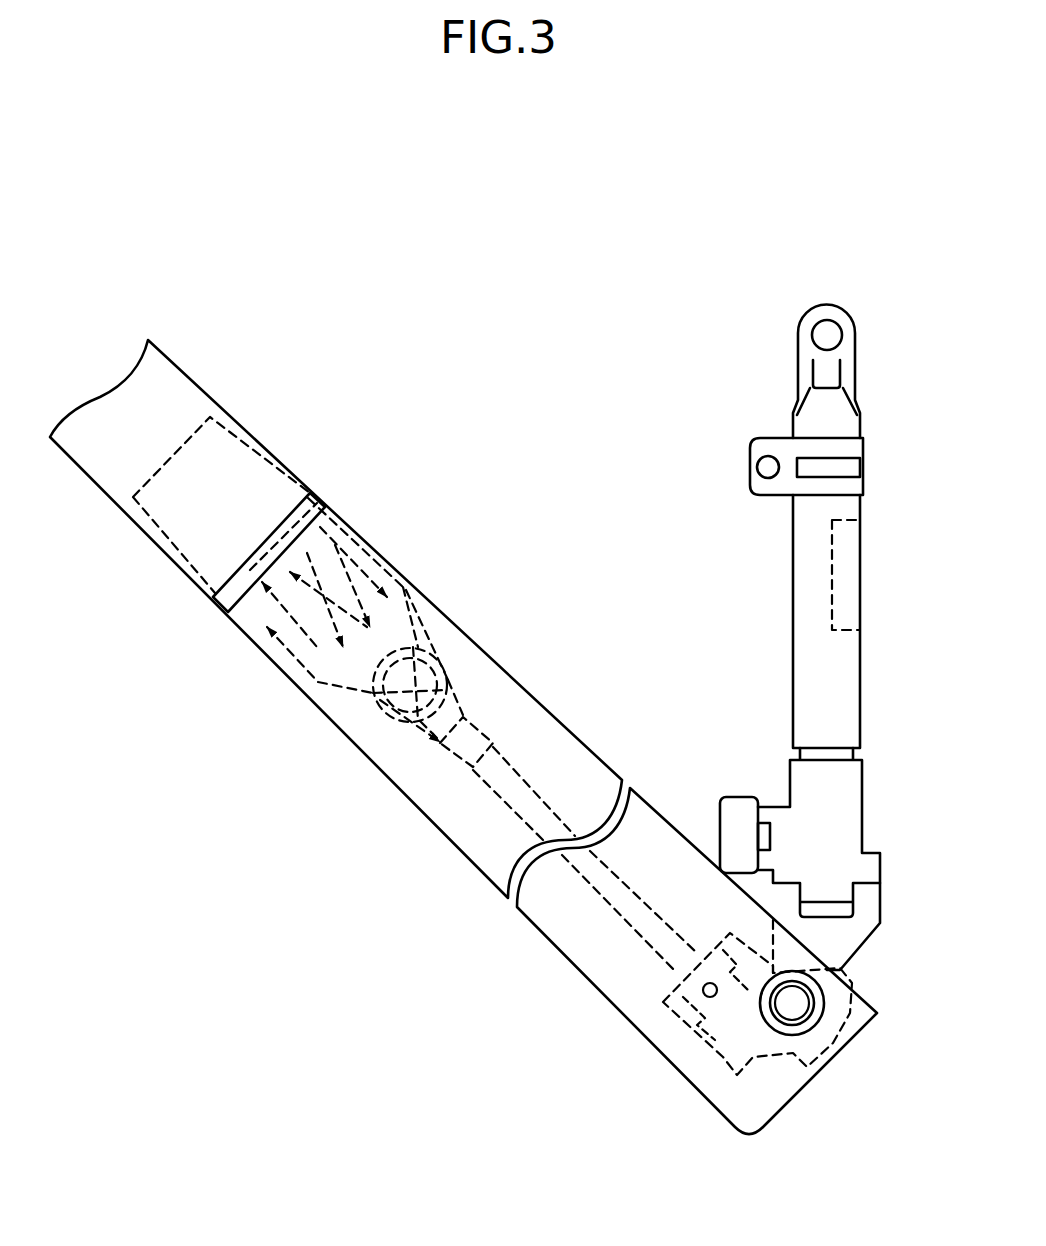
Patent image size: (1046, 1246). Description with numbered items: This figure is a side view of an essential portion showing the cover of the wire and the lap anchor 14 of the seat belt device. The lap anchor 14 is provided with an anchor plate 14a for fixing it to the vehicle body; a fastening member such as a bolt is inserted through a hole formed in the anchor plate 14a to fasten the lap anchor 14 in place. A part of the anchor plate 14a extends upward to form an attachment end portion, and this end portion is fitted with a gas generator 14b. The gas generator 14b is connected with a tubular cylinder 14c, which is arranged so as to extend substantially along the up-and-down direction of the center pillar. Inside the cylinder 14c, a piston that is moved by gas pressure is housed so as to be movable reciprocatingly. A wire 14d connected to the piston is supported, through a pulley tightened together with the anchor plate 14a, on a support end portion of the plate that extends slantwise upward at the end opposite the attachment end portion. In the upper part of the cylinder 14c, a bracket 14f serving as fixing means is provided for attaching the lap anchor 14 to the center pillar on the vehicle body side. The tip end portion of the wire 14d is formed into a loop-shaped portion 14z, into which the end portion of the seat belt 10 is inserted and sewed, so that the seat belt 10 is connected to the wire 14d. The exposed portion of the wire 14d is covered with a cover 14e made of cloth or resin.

The seat belt 10 is at (238, 428).
The lap anchor 14 is at (753, 750).
The anchor plate 14a is at (757, 1060).
The gas generator 14b is at (840, 812).
The cylinder 14c is at (840, 673).
The wire 14d is at (533, 790).
The cover 14e is at (442, 811).
The bracket 14f is at (845, 352).
The loop-shaped portion 14z is at (380, 702).